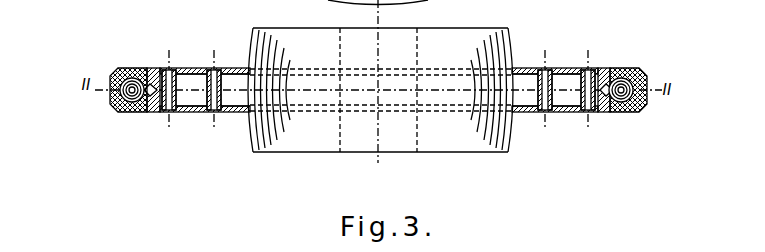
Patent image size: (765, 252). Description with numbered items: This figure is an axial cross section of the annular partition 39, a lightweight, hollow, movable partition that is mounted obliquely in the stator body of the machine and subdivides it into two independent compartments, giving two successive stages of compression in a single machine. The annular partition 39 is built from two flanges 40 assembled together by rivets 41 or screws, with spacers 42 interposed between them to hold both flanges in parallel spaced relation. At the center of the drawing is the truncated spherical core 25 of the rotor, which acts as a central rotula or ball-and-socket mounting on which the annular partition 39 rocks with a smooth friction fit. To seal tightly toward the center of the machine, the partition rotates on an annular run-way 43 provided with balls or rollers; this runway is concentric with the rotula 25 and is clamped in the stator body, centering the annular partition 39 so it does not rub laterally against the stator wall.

The truncated spherical core member 25 is at (492, 55).
The annular partition 39 is at (520, 83).
The flanges 40 is at (193, 113).
The rivets 41 is at (217, 68).
The spacers 42 is at (157, 67).
The annular run-way 43 is at (122, 112).